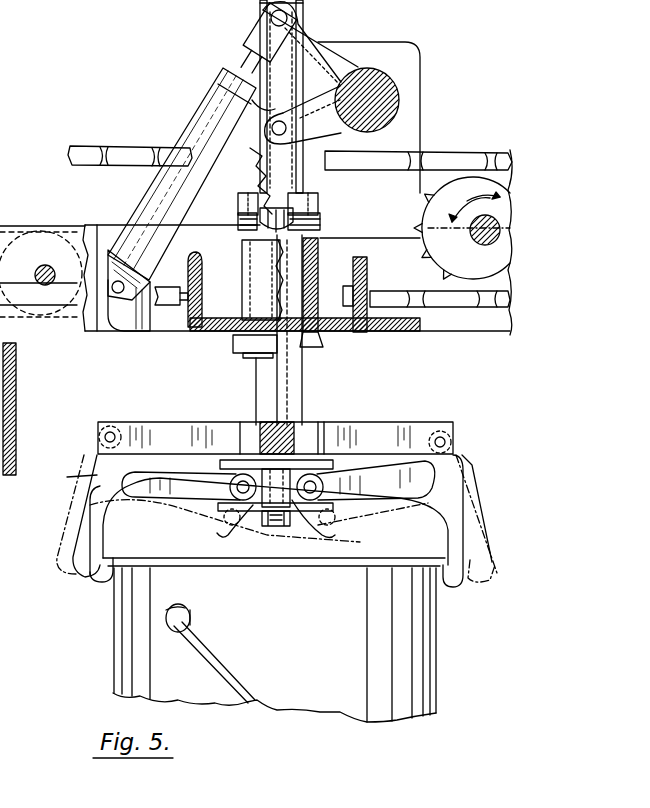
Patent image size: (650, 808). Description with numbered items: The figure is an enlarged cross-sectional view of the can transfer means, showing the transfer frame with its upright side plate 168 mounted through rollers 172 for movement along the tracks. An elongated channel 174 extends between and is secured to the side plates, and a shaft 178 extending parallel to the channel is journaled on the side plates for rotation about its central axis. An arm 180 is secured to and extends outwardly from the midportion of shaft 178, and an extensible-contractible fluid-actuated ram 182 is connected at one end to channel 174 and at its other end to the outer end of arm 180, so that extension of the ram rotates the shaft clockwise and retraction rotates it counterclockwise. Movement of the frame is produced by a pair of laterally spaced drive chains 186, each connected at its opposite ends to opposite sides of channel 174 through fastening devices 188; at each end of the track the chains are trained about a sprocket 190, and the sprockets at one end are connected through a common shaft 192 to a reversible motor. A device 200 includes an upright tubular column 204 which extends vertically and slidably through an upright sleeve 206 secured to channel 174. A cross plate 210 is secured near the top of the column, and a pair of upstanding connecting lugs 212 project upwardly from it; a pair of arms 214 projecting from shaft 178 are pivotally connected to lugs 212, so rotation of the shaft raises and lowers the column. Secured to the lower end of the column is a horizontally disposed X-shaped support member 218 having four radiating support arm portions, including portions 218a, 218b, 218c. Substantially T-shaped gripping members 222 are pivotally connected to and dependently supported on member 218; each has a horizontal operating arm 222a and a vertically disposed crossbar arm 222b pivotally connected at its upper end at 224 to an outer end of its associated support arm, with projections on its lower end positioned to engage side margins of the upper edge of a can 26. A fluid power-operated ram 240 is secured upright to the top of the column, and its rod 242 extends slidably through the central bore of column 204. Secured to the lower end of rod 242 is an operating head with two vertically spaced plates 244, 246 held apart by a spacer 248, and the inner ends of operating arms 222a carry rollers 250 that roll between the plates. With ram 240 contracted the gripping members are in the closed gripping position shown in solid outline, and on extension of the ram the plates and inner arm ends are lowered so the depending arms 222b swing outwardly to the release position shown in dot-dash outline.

The can 26 is at (432, 649).
The side plate 168 is at (100, 326).
The rollers 172 is at (80, 224).
The channel 174 is at (366, 268).
The shaft 178 is at (386, 83).
The arm 180 is at (312, 34).
The fluid-actuated ram 182 is at (220, 100).
The drive chains 186 is at (130, 152).
The fastening devices 188 is at (220, 277).
The sprocket 190 is at (485, 178).
The common shaft 192 is at (478, 246).
The device 200 is at (178, 366).
The tubular column 204 is at (254, 392).
The sleeve 206 is at (313, 250).
The cross plate 210 is at (320, 203).
The connecting lugs 212 is at (258, 172).
The arms 214 is at (342, 134).
The X-shaped support member 218 is at (98, 421).
The support arm portion 218a is at (177, 434).
The support arm portion 218b is at (290, 428).
The support arm portion 218c is at (383, 431).
The gripping members 222 is at (92, 582).
The operating arm 222a is at (160, 487).
The crossbar arm 222b is at (59, 489).
The pivotal connection 224 is at (104, 435).
The fluid power-operated ram 240 is at (264, 8).
The rod 242 is at (320, 217).
The plate 244 is at (222, 464).
The plate 246 is at (228, 538).
The spacer 248 is at (320, 538).
The rollers 250 is at (323, 478).